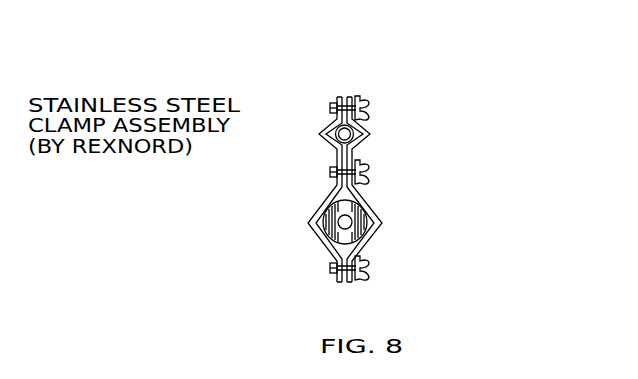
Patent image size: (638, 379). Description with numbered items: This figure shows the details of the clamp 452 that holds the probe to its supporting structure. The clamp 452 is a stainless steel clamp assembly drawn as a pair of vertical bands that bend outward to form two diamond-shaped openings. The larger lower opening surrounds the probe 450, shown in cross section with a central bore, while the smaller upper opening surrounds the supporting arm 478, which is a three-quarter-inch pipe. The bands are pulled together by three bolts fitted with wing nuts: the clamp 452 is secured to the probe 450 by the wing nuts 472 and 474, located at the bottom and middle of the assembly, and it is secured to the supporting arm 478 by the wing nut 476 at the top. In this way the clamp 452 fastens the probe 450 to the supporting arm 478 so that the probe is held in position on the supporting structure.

The probe 450 is at (368, 228).
The clamp 452 is at (312, 232).
The wing nut 472 is at (328, 268).
The wing nut 474 is at (330, 173).
The wing nut 476 is at (330, 109).
The supporting arm 478 is at (367, 128).